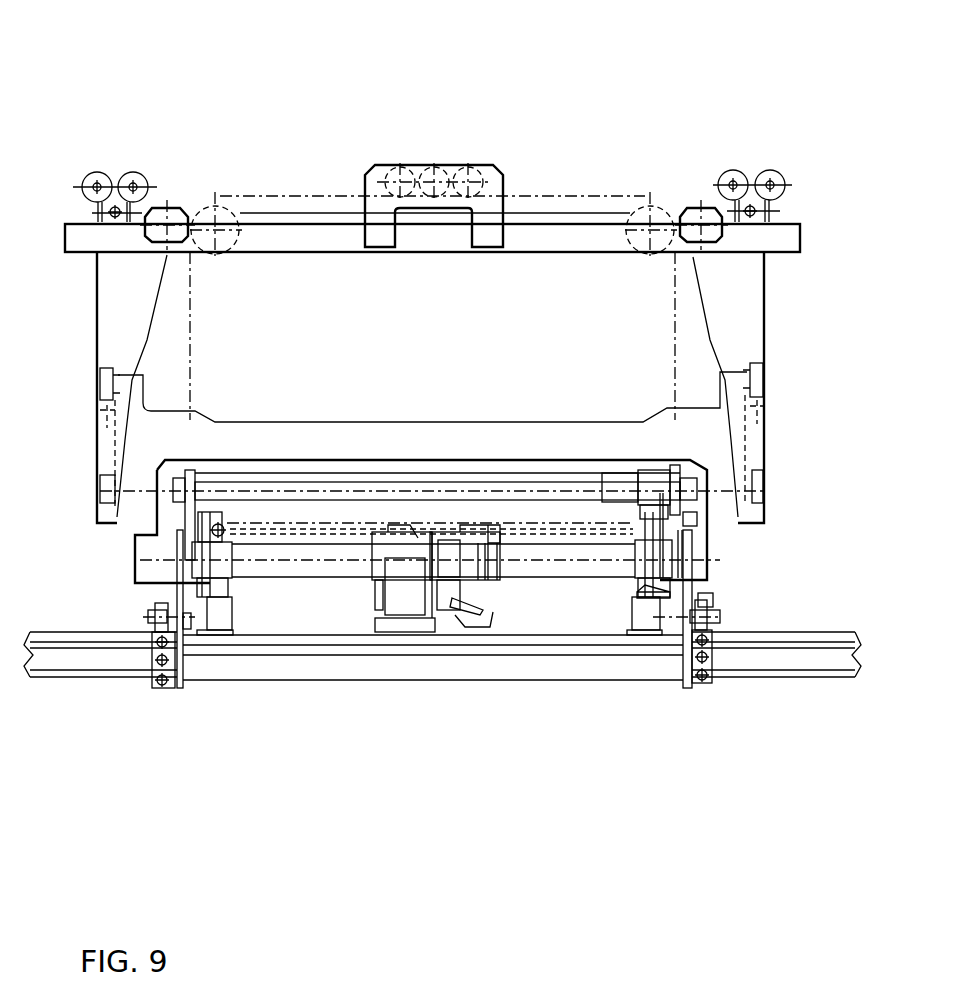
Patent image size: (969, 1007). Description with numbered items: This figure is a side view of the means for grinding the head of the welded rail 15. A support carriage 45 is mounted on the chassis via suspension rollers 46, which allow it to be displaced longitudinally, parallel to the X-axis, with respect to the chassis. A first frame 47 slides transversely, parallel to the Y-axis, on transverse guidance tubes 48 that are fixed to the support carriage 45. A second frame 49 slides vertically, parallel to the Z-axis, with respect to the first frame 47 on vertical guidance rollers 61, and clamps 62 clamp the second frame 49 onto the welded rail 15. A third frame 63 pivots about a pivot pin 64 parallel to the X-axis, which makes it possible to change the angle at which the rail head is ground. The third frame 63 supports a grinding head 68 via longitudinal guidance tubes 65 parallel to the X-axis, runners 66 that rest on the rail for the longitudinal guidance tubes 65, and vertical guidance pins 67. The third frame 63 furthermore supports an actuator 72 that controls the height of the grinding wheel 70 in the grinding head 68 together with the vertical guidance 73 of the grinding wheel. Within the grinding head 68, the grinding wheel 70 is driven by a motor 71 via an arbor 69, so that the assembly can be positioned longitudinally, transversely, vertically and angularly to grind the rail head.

The welded rail 15 is at (775, 652).
The support carriage 45 is at (778, 230).
The suspension rollers 46 is at (130, 173).
The first frame 47 is at (128, 293).
The transverse guidance tubes 48 is at (172, 208).
The second frame 49 is at (145, 555).
The vertical guidance rollers 61 is at (108, 488).
The clamps 62 is at (152, 688).
The third frame 63 is at (192, 503).
The pivot pin 64 is at (179, 690).
The longitudinal guidance tubes 65 is at (265, 567).
The runners 66 is at (223, 635).
The vertical guidance pins 67 is at (638, 590).
The grinding head 68 is at (375, 582).
The arbor 69 is at (395, 605).
The grinding wheel 70 is at (420, 627).
The motor 71 is at (397, 527).
The actuator 72 is at (477, 595).
The vertical guidance 73 is at (443, 607).